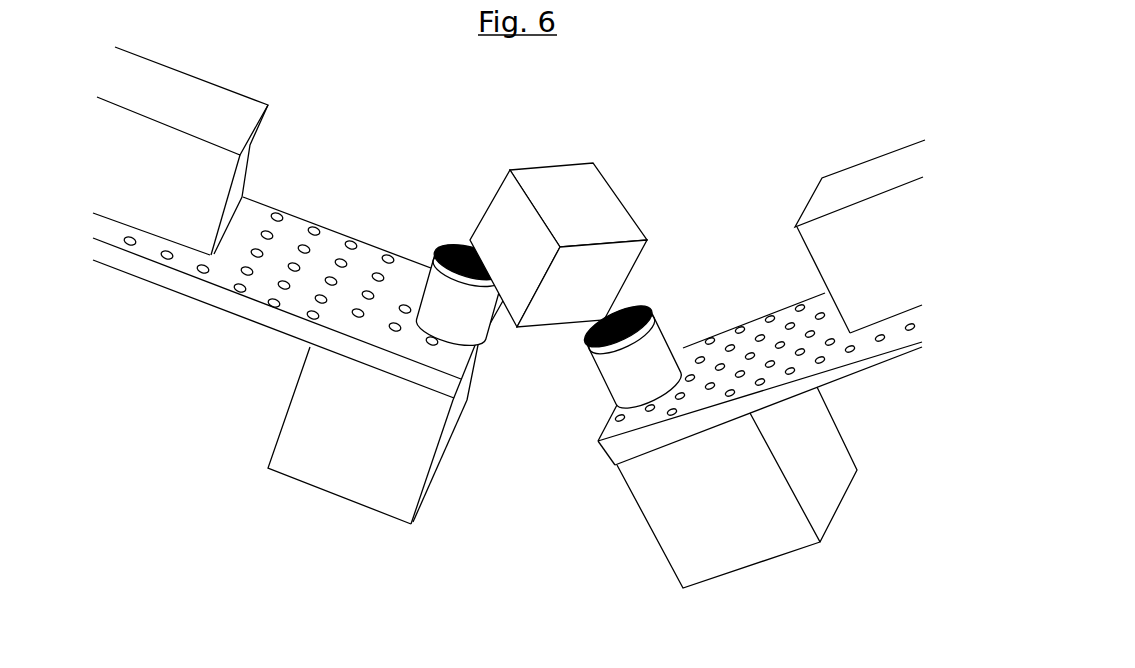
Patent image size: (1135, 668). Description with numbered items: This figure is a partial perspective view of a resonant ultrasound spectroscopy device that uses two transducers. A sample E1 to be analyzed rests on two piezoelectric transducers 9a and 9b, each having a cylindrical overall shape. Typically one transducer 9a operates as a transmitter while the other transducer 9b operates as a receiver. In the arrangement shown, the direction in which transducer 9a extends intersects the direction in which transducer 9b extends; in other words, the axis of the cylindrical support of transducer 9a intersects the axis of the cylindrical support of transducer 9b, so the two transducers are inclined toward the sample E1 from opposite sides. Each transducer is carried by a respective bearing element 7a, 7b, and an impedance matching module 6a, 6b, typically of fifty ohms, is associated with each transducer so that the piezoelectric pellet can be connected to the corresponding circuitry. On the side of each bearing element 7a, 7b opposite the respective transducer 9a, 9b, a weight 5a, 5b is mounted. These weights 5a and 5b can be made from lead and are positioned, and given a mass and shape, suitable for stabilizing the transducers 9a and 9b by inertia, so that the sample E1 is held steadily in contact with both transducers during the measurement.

The weight 5a is at (318, 472).
The weight 5b is at (763, 547).
The impedance matching module 6a is at (208, 95).
The impedance matching module 6b is at (867, 175).
The bearing element 7a is at (187, 287).
The bearing element 7b is at (857, 365).
The piezoelectric transducer 9a is at (440, 224).
The piezoelectric transducer 9b is at (667, 284).
The sample E1 is at (610, 203).